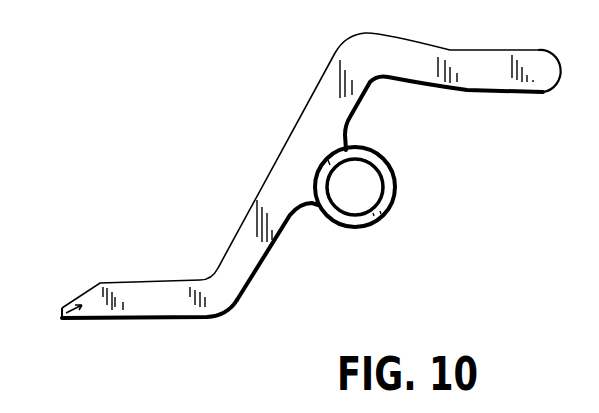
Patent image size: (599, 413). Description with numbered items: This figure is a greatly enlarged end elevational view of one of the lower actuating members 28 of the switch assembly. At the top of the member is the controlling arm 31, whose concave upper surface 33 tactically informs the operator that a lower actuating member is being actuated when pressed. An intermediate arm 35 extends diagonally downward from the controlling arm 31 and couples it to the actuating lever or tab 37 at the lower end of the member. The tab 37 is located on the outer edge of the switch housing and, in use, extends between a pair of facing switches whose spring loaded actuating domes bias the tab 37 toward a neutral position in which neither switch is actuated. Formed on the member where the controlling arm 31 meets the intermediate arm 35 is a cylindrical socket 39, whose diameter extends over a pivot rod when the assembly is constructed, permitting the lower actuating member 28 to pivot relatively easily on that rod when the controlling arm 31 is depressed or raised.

The lower actuating member 28 is at (64, 313).
The controlling arm 31 is at (453, 50).
The concave upper surface 33 is at (527, 53).
The intermediate arm 35 is at (283, 157).
The actuating lever or tab 37 is at (170, 310).
The cylindrical socket 39 is at (387, 197).